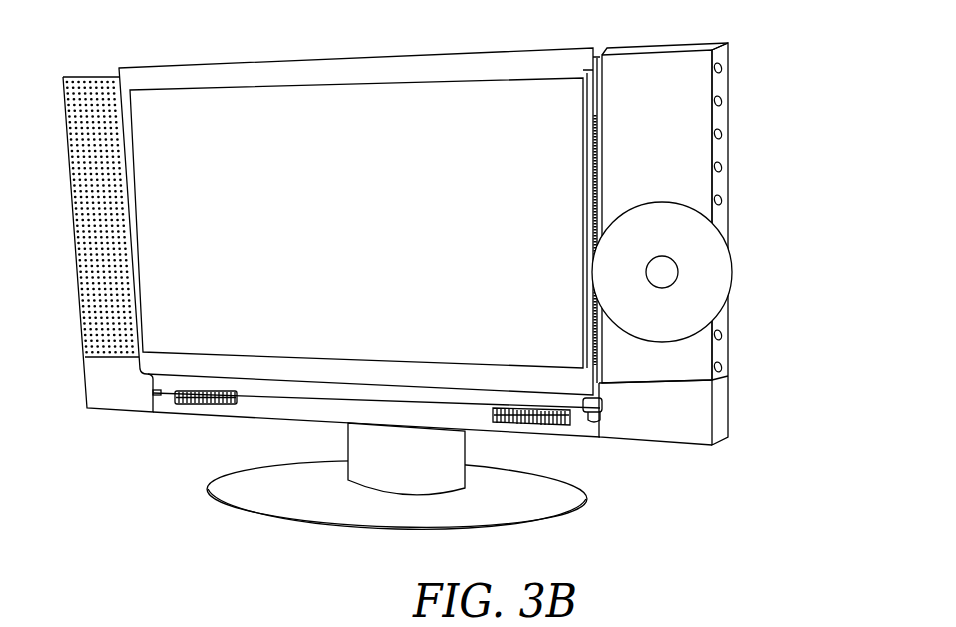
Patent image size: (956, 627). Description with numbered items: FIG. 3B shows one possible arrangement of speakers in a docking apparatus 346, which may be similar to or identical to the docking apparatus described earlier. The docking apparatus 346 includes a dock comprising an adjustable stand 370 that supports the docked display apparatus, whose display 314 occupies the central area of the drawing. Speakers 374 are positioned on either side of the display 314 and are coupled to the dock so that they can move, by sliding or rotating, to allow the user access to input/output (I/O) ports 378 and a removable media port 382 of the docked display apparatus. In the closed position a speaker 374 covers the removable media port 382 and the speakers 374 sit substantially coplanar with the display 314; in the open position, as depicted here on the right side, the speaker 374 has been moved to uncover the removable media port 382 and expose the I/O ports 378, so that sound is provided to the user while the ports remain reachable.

The docking apparatus 346 is at (758, 30).
The display 314 is at (312, 107).
The speakers 374 is at (103, 110).
The input/output (I/O) ports 378 is at (600, 148).
The removable media port 382 is at (597, 271).
The adjustable stand 370 is at (182, 421).